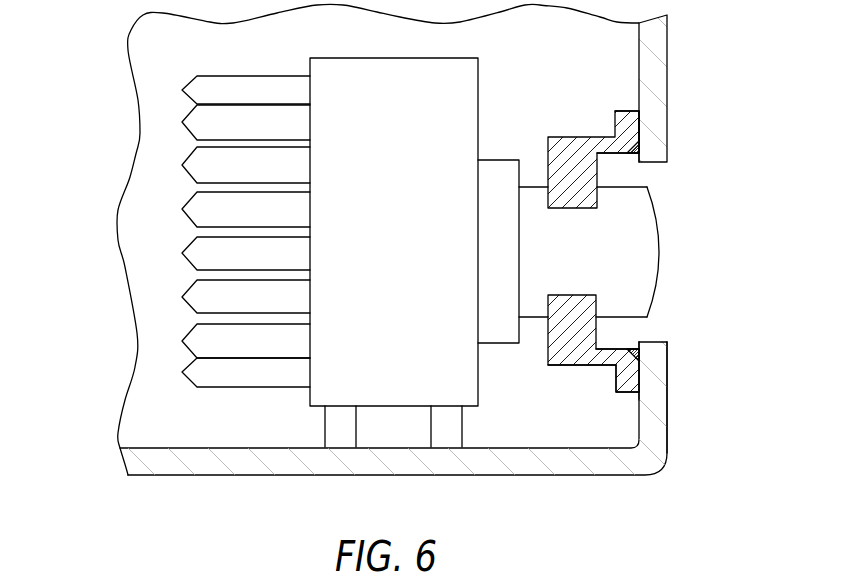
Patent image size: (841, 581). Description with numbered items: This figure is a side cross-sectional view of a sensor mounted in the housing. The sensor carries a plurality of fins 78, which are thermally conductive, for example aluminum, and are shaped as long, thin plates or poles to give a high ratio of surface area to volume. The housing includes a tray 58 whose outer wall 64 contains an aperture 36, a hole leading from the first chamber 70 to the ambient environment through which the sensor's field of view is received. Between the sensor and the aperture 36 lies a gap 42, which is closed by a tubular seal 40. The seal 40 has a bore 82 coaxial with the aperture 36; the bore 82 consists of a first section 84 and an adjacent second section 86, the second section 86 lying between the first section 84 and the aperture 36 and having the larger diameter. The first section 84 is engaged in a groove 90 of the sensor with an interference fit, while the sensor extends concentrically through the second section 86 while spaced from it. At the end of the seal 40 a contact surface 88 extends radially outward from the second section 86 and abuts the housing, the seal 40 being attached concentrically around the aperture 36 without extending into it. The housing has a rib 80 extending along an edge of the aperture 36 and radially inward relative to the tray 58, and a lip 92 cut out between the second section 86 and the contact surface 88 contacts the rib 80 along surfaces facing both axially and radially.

The aperture 36 is at (657, 341).
The seal 40 is at (573, 366).
The gap 42 is at (650, 175).
The tray 58 is at (218, 477).
The outer wall 64 is at (669, 413).
The first chamber 70 is at (157, 407).
The fins 78 is at (187, 174).
The rib 80 is at (632, 353).
The bore 82 is at (623, 216).
The first section 84 is at (567, 295).
The second section 86 is at (605, 348).
The contact surface 88 is at (641, 378).
The groove 90 is at (570, 207).
The lip 92 is at (631, 363).